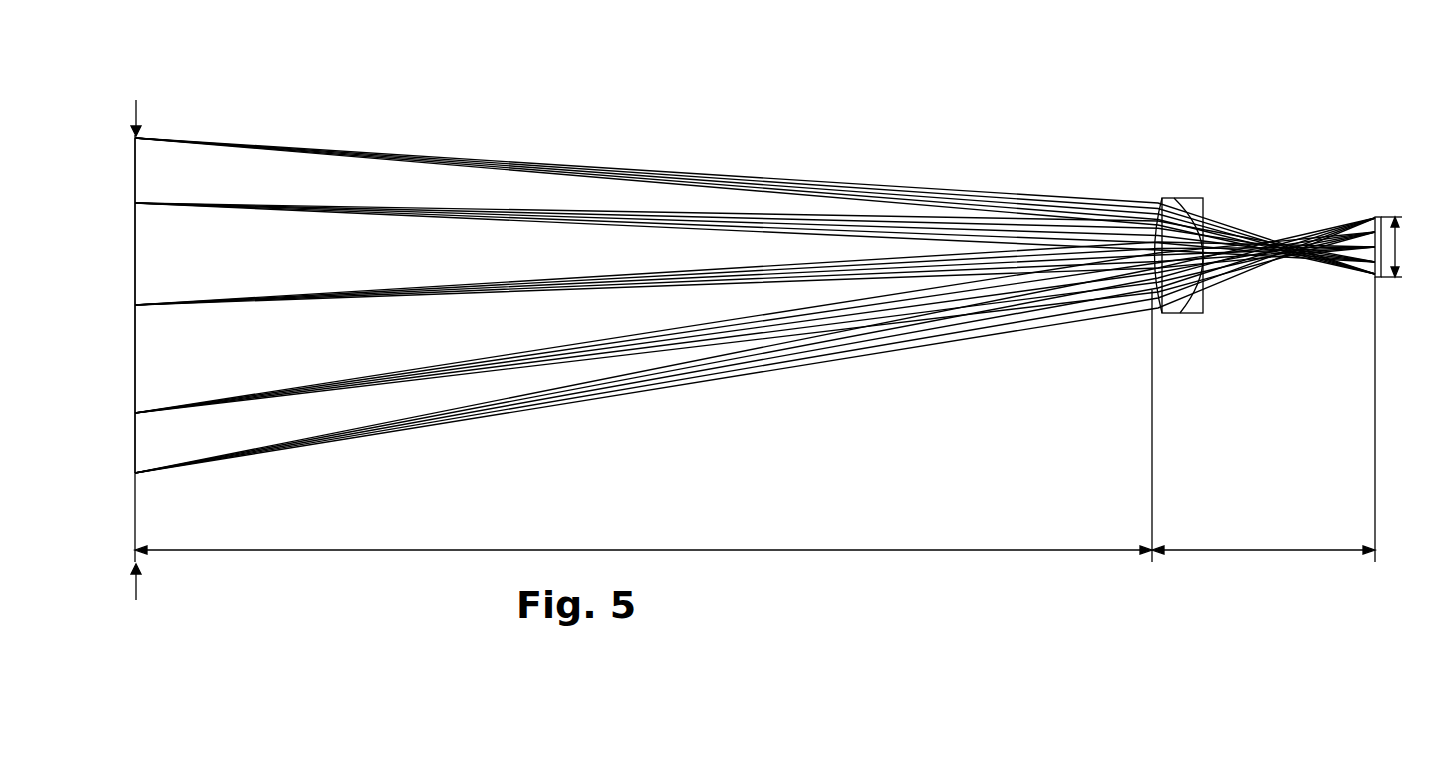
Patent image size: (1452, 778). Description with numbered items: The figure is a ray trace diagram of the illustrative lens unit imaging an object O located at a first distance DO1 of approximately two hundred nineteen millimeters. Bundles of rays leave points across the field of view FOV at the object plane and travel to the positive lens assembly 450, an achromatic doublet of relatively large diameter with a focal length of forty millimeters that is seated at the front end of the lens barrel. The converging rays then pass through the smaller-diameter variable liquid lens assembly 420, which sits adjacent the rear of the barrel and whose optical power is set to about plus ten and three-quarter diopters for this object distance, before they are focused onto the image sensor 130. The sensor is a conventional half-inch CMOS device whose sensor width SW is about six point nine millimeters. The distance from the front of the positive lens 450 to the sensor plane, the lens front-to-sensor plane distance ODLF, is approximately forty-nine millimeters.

The field of view FOV is at (138, 114).
The object O is at (128, 281).
The positive lens assembly 450 is at (1181, 194).
The variable lens assembly 420 is at (1294, 258).
The image sensor 130 is at (1383, 238).
The sensor width SW is at (1395, 246).
The first object distance DO1 is at (776, 550).
The lens front-to-sensor plane distance ODLF is at (1262, 551).